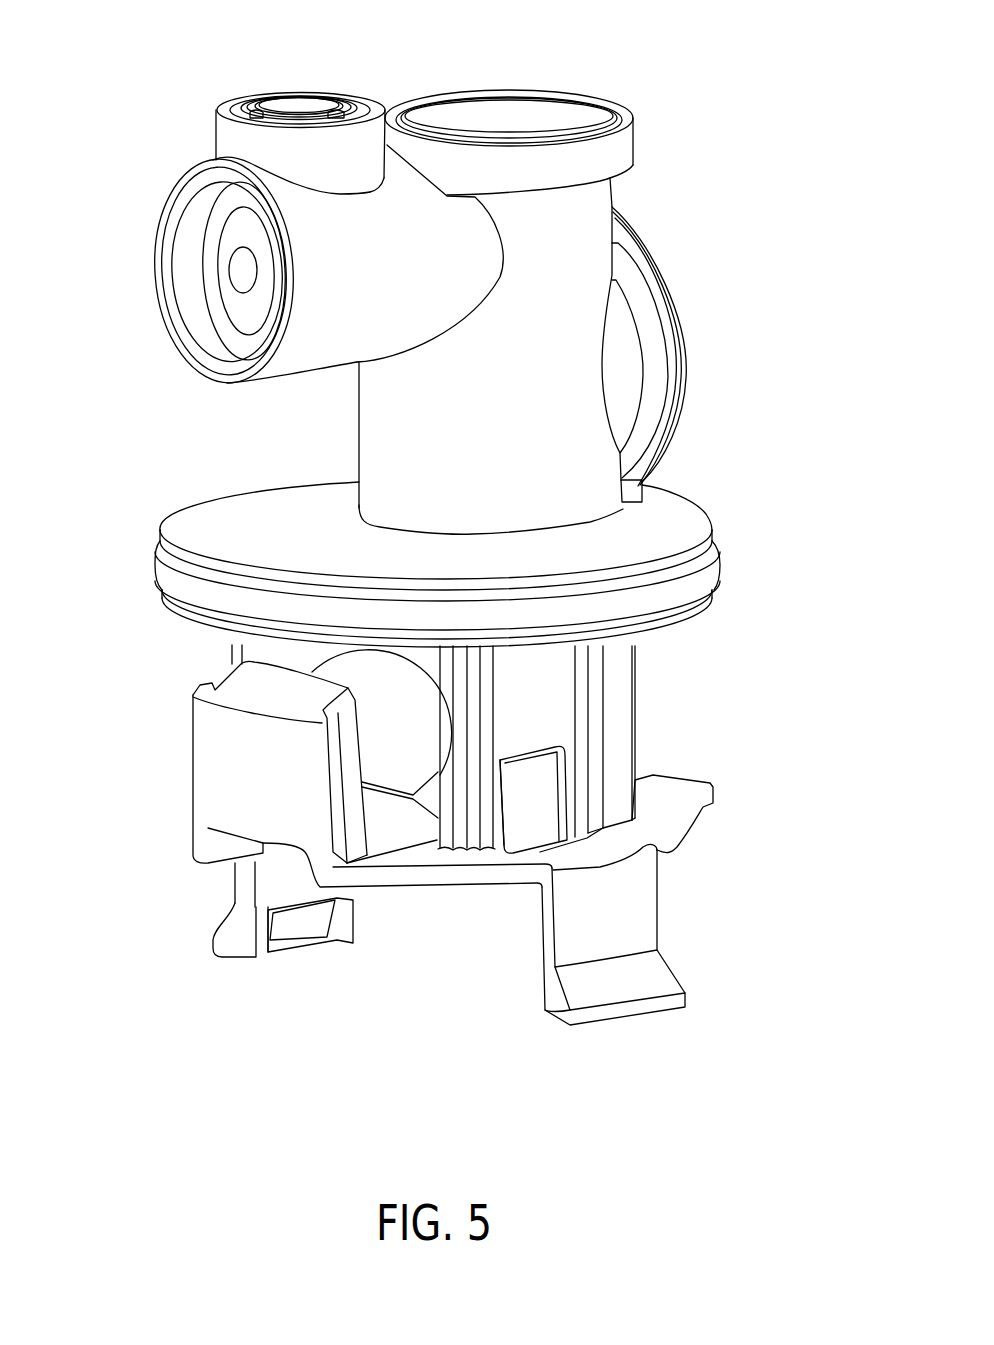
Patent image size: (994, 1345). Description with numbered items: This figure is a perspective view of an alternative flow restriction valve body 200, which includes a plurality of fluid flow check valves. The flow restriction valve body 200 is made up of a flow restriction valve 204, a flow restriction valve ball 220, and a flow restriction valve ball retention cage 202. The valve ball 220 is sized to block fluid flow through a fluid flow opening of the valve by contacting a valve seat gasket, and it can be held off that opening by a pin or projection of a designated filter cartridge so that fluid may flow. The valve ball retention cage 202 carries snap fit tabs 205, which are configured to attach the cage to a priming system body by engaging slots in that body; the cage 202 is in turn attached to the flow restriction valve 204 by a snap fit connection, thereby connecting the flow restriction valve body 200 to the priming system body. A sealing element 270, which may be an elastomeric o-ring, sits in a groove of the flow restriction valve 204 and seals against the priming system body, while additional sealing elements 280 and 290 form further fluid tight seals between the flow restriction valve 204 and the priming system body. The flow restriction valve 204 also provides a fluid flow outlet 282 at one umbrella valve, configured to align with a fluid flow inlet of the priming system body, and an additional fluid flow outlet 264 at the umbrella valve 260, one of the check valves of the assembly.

The flow restriction valve body 200 is at (713, 128).
The flow restriction valve ball retention cage 202 is at (678, 818).
The flow restriction valve 204 is at (685, 512).
The snap fit tabs 205 is at (655, 975).
The flow restriction valve ball 220 is at (390, 757).
The umbrella valve 260 is at (240, 268).
The fluid flow outlet 264 is at (223, 323).
The sealing element 270 is at (168, 577).
The sealing element 280 is at (415, 117).
The fluid flow outlet 282 is at (482, 134).
The sealing element 290 is at (250, 100).